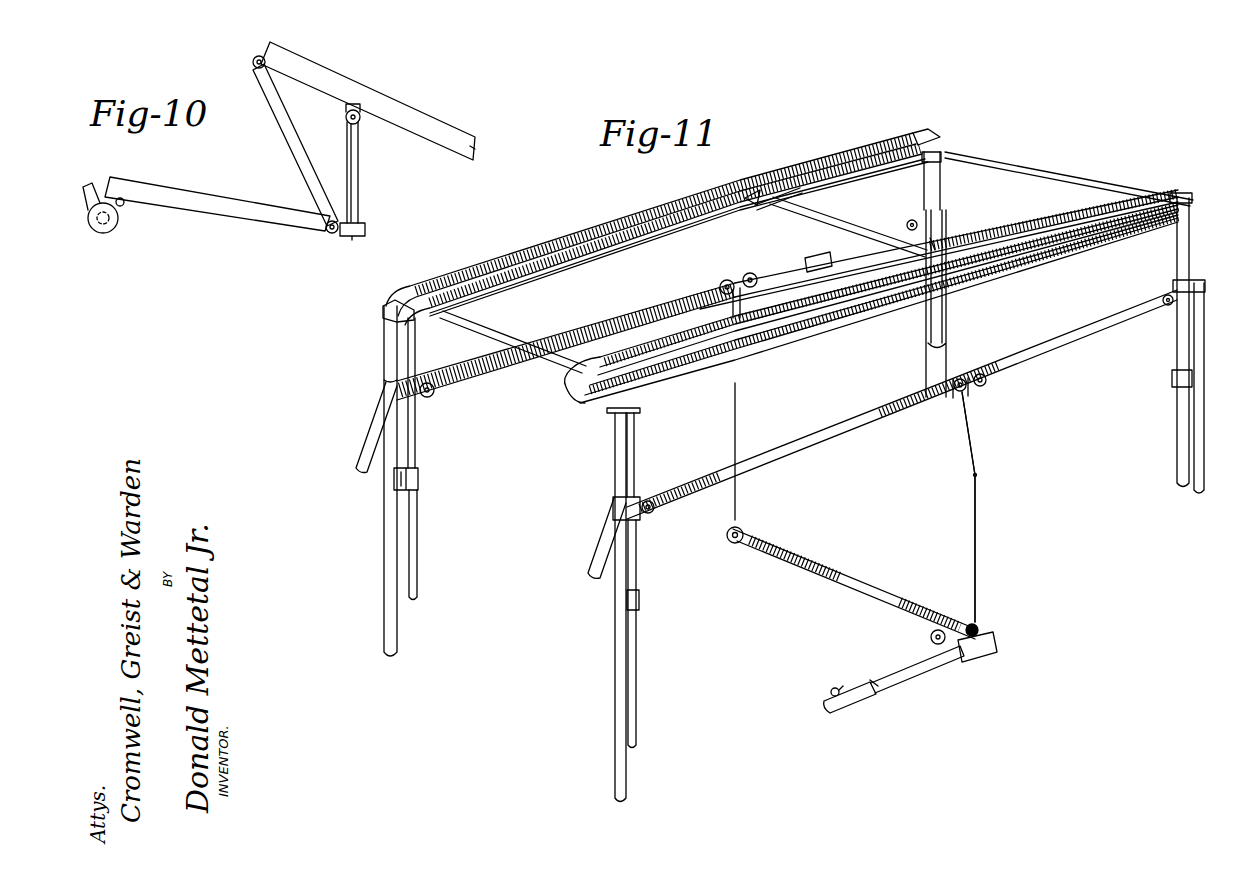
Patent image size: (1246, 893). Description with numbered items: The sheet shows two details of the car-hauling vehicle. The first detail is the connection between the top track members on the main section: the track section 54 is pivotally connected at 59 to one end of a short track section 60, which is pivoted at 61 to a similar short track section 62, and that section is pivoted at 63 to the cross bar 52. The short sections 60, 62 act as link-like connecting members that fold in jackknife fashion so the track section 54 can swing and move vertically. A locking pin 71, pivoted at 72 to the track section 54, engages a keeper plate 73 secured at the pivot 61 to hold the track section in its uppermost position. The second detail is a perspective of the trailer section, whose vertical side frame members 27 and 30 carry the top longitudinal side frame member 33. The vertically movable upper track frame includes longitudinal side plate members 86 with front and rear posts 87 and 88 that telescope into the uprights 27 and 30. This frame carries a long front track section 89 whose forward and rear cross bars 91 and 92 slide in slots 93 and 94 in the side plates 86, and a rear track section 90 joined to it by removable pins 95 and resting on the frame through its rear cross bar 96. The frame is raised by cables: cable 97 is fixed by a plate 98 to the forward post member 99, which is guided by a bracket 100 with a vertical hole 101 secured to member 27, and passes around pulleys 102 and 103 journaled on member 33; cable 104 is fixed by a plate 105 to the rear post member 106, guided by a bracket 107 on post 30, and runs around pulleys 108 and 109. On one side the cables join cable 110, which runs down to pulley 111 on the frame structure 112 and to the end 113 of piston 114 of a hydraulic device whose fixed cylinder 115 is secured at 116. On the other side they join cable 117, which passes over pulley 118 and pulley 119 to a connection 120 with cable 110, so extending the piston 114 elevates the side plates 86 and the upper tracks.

In FIG. 11, the side frame forming member 27 is at (384, 537).
In FIG. 11, the side frame forming member 30 is at (1205, 350).
In FIG. 11, the top longitudinally extending side frame forming member 33 is at (1067, 337).
In FIG. 10, the cross bar 52 is at (106, 234).
In FIG. 10, the track section 54 is at (404, 110).
In FIG. 10, the pivotal connection 59 is at (252, 62).
In FIG. 10, the short track section 60 is at (280, 140).
In FIG. 10, the pivotal connection 61 is at (326, 245).
In FIG. 10, the track section 62 is at (212, 208).
In FIG. 10, the pivotal connection 63 is at (124, 206).
In FIG. 10, the locking pin 71 is at (358, 178).
In FIG. 10, the pivot 72 is at (362, 124).
In FIG. 10, the keeper plate 73 is at (356, 240).
In FIG. 11, the side plate member 86 is at (885, 310).
In FIG. 11, the front vertical post 87 is at (384, 358).
In FIG. 11, the rear vertical post 88 is at (942, 176).
In FIG. 11, the front track section 89 is at (608, 232).
In FIG. 11, the rear track section 90 is at (850, 160).
In FIG. 11, the forward cross bar 91 is at (492, 328).
In FIG. 11, the rear cross bar 92 is at (822, 224).
In FIG. 11, the slot 93 is at (773, 350).
In FIG. 11, the slot 94 is at (1062, 250).
In FIG. 11, the removable pin 95 is at (800, 198).
In FIG. 11, the rear cross bar 96 is at (1025, 170).
In FIG. 11, the cable 97 is at (503, 367).
In FIG. 11, the bracket or plate 98 is at (413, 414).
In FIG. 11, the forward post member 99 is at (417, 522).
In FIG. 11, the bracket 100 is at (418, 477).
In FIG. 11, the vertical hole 101 is at (418, 470).
In FIG. 11, the pulley 102 is at (436, 393).
In FIG. 11, the pulley 103 is at (727, 296).
In FIG. 11, the cable 104 is at (818, 250).
In FIG. 11, the plate 105 is at (1170, 321).
In FIG. 11, the rear post member 106 is at (920, 180).
In FIG. 11, the bracket 107 is at (1173, 380).
In FIG. 11, the pulley 108 is at (912, 220).
In FIG. 11, the pulley 109 is at (753, 284).
In FIG. 11, the cable 110 is at (975, 510).
In FIG. 11, the pulley 111 is at (972, 620).
In FIG. 11, the frame structure 112 is at (828, 566).
In FIG. 11, the end of piston 113 is at (840, 688).
In FIG. 11, the piston 114 is at (862, 700).
In FIG. 11, the cylinder member 115 is at (915, 682).
In FIG. 11, the attachment point 116 is at (968, 658).
In FIG. 11, the cable 117 is at (736, 420).
In FIG. 11, the pulley 118 is at (737, 545).
In FIG. 11, the pulley 119 is at (930, 640).
In FIG. 11, the connection 120 is at (880, 665).